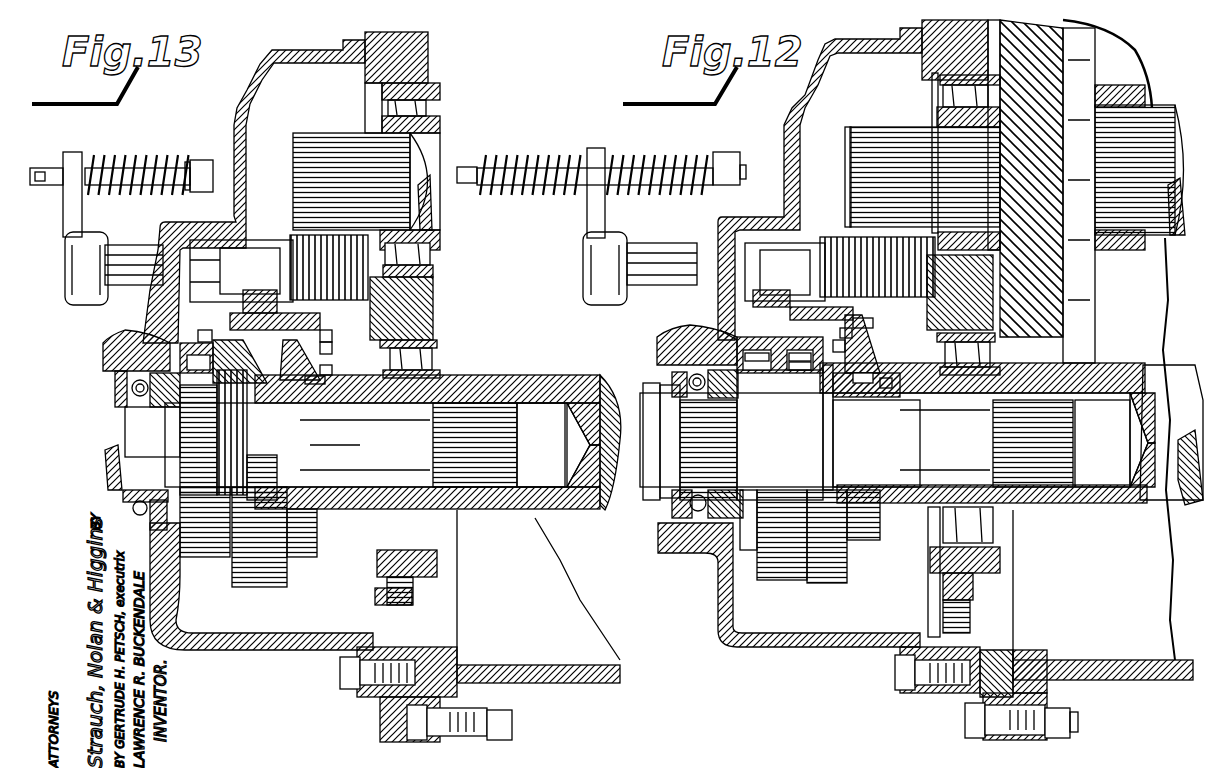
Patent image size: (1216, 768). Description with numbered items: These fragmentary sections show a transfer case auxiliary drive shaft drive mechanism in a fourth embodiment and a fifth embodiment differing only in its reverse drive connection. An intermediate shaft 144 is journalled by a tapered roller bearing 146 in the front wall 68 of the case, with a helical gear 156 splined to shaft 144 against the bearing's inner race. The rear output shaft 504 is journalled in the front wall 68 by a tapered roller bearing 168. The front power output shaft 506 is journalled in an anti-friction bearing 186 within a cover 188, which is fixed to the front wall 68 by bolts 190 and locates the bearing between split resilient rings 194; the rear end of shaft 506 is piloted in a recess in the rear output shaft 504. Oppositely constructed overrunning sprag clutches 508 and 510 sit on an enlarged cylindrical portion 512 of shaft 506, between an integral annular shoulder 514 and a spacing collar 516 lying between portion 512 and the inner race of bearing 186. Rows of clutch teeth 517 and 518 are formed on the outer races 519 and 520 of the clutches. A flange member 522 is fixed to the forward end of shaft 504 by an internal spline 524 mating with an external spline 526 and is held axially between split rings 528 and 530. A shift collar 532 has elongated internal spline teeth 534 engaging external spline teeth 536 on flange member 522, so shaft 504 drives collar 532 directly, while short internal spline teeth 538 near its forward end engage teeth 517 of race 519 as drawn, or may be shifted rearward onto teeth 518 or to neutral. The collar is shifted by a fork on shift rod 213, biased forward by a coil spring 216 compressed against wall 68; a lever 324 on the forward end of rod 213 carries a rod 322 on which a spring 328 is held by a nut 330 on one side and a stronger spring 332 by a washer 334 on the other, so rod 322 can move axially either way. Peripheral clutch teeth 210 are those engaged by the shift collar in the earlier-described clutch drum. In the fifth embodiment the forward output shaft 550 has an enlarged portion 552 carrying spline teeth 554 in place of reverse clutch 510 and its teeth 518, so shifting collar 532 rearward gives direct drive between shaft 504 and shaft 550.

In FIG. 13, the front wall 68 is at (420, 60).
In FIG. 12, the front wall 68 is at (930, 22).
In FIG. 13, the intermediate shaft 144 is at (442, 140).
In FIG. 12, the intermediate shaft 144 is at (1168, 115).
In FIG. 13, the tapered roller bearing 146 is at (430, 103).
In FIG. 12, the tapered roller bearing 146 is at (940, 100).
In FIG. 12, the helical gear 156 is at (1063, 305).
In FIG. 13, the tapered roller bearing 168 is at (430, 350).
In FIG. 12, the tapered roller bearing 168 is at (990, 350).
In FIG. 13, the anti-friction bearing 186 is at (125, 388).
In FIG. 12, the anti-friction bearing 186 is at (672, 382).
In FIG. 13, the cover 188 is at (247, 107).
In FIG. 13, the bolts 190 is at (342, 671).
In FIG. 12, the bolts 190 is at (893, 671).
In FIG. 13, the split resilient locating rings 194 is at (160, 365).
In FIG. 12, the split resilient locating rings 194 is at (705, 345).
In FIG. 13, the peripheral teeth 210 is at (243, 237).
In FIG. 12, the peripheral teeth 210 is at (800, 237).
In FIG. 13, the shift rod 213 is at (120, 248).
In FIG. 12, the shift rod 213 is at (660, 250).
In FIG. 13, the coil spring 216 is at (302, 243).
In FIG. 12, the coil spring 216 is at (837, 243).
In FIG. 13, the adjusting screw 322 is at (50, 160).
In FIG. 13, the shift lever 324 is at (78, 152).
In FIG. 12, the shift lever 324 is at (595, 148).
In FIG. 13, the lever return spring 328 is at (133, 153).
In FIG. 12, the lever return spring 328 is at (640, 150).
In FIG. 13, the spring retaining nut 330 is at (200, 160).
In FIG. 12, the spring 332 is at (510, 160).
In FIG. 12, the washer 334 is at (478, 160).
In FIG. 13, the rear output shaft 504 is at (478, 382).
In FIG. 12, the rear output shaft 504 is at (1088, 370).
In FIG. 12, the front power output shaft 506 is at (977, 441).
In FIG. 12, the overrunning sprag clutch 508 is at (753, 380).
In FIG. 12, the overrunning sprag clutch 510 is at (793, 372).
In FIG. 12, the enlarged cylindrical portion 512 is at (793, 434).
In FIG. 12, the integral annular shoulder 514 is at (830, 424).
In FIG. 13, the spacing collar 516 is at (120, 472).
In FIG. 12, the spacing collar 516 is at (722, 400).
In FIG. 13, the clutch teeth 517 is at (204, 330).
In FIG. 12, the clutch teeth 517 is at (755, 330).
In FIG. 12, the clutch teeth 518 is at (758, 375).
In FIG. 12, the outer race 519 is at (720, 330).
In FIG. 12, the outer race 520 is at (845, 345).
In FIG. 13, the flange member 522 is at (325, 348).
In FIG. 12, the flange member 522 is at (880, 345).
In FIG. 12, the internal spline 524 is at (865, 360).
In FIG. 13, the external spline 526 is at (325, 378).
In FIG. 12, the external spline 526 is at (880, 443).
In FIG. 12, the split ring 528 is at (802, 380).
In FIG. 13, the split ring 530 is at (325, 365).
In FIG. 12, the split ring 530 is at (878, 375).
In FIG. 13, the shift collar 532 is at (322, 316).
In FIG. 12, the shift collar 532 is at (830, 565).
In FIG. 13, the internal spline teeth 534 is at (325, 333).
In FIG. 12, the internal spline teeth 534 is at (858, 318).
In FIG. 13, the external peripheral spline teeth 536 is at (302, 359).
In FIG. 12, the external peripheral spline teeth 536 is at (852, 330).
In FIG. 13, the internal spline teeth 538 is at (245, 336).
In FIG. 12, the internal spline teeth 538 is at (810, 307).
In FIG. 13, the forward output shaft 550 is at (173, 452).
In FIG. 13, the enlarged portion 552 is at (300, 447).
In FIG. 13, the spline teeth 554 is at (270, 445).